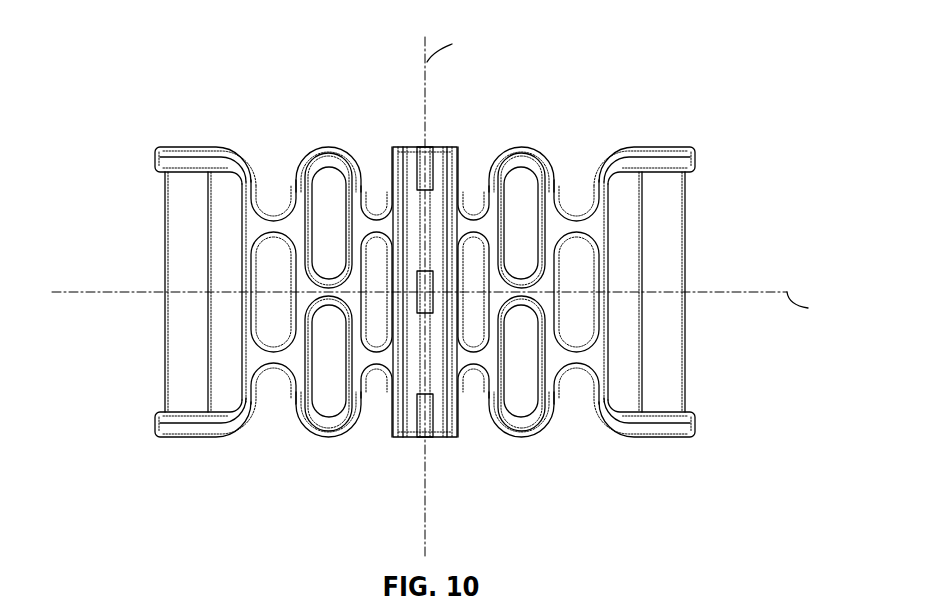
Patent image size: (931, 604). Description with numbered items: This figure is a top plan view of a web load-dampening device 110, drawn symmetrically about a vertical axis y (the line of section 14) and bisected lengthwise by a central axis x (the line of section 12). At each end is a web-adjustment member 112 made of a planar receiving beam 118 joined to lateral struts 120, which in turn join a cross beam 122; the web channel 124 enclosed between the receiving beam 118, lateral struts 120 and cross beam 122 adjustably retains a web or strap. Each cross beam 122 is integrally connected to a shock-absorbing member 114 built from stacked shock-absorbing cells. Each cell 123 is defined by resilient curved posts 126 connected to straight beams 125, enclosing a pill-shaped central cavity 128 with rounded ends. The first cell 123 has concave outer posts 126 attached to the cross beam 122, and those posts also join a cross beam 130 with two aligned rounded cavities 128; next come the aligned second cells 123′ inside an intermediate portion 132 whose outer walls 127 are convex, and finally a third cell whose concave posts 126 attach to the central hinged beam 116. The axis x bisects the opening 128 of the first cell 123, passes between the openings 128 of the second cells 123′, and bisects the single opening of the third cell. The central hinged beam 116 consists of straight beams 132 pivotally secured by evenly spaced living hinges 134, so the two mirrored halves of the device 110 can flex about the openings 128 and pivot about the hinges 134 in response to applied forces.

The web load-dampening device 110 is at (137, 41).
The web-adjustment member 112 is at (167, 448).
The shock-absorbing member 114 is at (307, 455).
The central hinged beam 116 is at (402, 440).
The planar receiving beam 118 is at (177, 223).
The lateral strut 120 is at (178, 147).
The cross beam 122 is at (247, 196).
The shock-absorbing cell 123 is at (588, 253).
The second cell 123′ is at (300, 415).
The web channel 124 is at (225, 249).
The straight beam 125 is at (296, 285).
The curved post 126 is at (280, 205).
The convex outer wall 127 is at (549, 163).
The central cavity 128 is at (266, 216).
The cross beam 130 is at (311, 172).
The intermediate portion 132 is at (340, 165).
The living hinge 134 is at (434, 181).
The section line 12- 12 is at (52, 290).
The section line 14- 14 is at (425, 37).